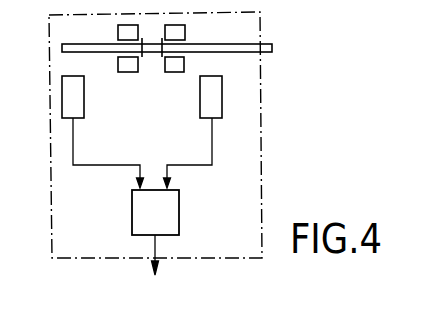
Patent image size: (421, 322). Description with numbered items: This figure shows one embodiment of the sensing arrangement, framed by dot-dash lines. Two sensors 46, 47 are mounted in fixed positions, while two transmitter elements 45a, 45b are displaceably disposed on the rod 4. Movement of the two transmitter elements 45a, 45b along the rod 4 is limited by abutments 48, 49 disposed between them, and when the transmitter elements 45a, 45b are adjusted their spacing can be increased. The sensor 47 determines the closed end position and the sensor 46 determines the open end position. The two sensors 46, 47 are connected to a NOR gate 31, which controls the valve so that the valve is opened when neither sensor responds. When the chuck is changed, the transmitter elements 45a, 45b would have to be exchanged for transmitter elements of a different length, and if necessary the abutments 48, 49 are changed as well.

The rod 4 is at (89, 53).
The transmitter element 45a is at (128, 72).
The transmitter element 45b is at (185, 31).
The abutment 48 is at (142, 57).
The abutment 49 is at (158, 57).
The sensor 46 is at (85, 113).
The sensor 47 is at (200, 113).
The NOR gate 31 is at (179, 214).